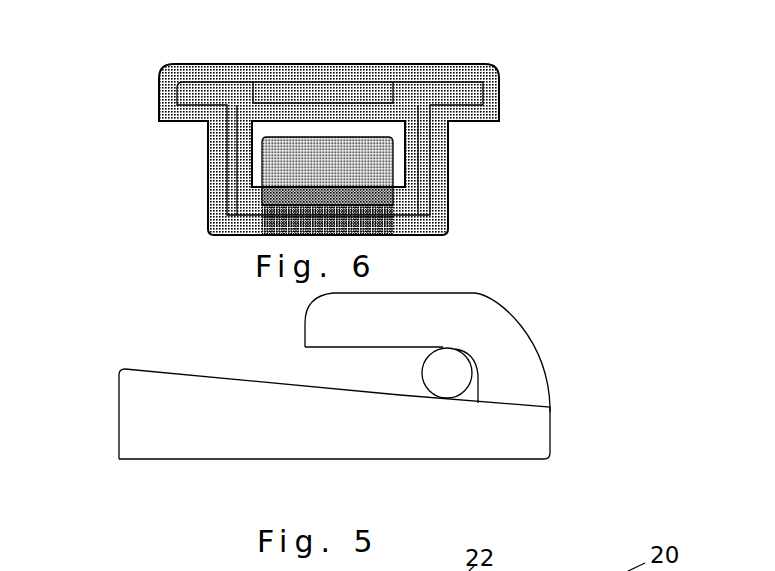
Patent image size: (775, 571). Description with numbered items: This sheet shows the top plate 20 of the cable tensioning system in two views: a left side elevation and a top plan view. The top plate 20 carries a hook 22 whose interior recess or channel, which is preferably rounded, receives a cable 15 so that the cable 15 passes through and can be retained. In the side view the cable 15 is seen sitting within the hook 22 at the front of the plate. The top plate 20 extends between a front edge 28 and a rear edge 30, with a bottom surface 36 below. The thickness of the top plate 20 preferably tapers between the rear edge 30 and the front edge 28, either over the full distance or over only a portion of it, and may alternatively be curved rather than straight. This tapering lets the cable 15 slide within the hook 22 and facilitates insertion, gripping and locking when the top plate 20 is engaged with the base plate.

In FIG. 6, the top plate 20 is at (552, 100).
In FIG. 5, the top plate 20 is at (580, 337).
In FIG. 6, the hook 22 is at (320, 155).
In FIG. 5, the hook 22 is at (375, 318).
In FIG. 5, the cable 15 is at (450, 371).
In FIG. 5, the front edge 28 is at (552, 432).
In FIG. 5, the rear edge 30 is at (116, 398).
In FIG. 5, the bottom surface 36 is at (208, 478).